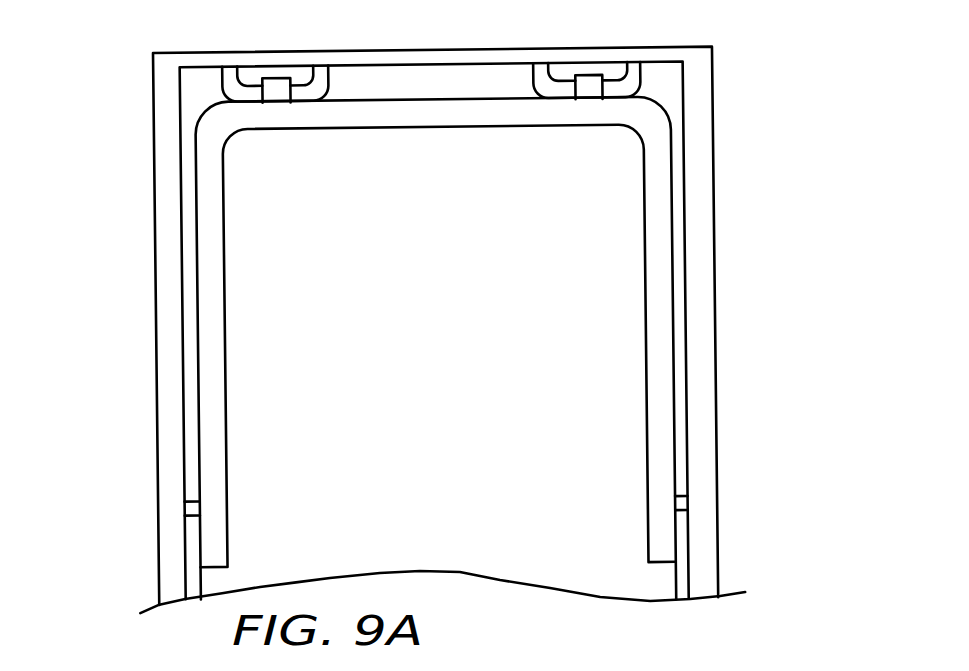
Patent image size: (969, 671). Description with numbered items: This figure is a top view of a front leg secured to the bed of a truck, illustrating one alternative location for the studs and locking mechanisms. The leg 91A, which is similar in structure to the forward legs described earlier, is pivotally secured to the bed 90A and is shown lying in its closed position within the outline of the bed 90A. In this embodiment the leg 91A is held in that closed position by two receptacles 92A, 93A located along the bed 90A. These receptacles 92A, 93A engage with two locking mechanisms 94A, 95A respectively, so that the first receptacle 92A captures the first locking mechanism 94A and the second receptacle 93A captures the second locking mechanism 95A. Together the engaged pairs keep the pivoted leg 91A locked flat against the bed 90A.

The bed 90A is at (700, 352).
The leg 91A is at (208, 352).
The receptacle 92A is at (229, 79).
The receptacle 93A is at (542, 83).
The locking mechanism 94A is at (277, 90).
The locking mechanism 95A is at (588, 90).